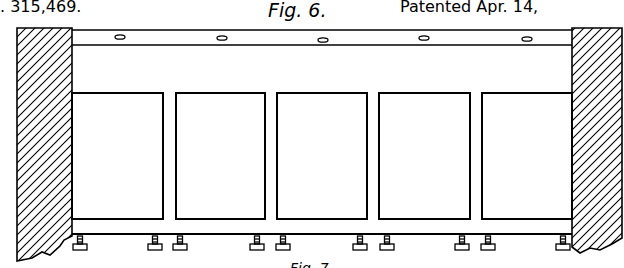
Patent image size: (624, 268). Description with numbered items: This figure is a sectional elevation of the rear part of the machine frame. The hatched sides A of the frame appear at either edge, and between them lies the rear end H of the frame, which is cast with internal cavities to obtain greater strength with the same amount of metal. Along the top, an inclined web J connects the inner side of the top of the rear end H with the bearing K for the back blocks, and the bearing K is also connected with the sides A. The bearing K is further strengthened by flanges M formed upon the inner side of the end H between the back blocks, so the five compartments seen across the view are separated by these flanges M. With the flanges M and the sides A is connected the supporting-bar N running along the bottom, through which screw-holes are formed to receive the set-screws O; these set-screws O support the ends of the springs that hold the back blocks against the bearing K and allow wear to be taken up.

The sides of the frame A is at (319, 144).
The inclined web J is at (322, 27).
The bearing K is at (322, 59).
The rear end of the frame H is at (322, 156).
The flanges M is at (322, 156).
The supporting-bar N is at (322, 227).
The set-screws O is at (321, 146).